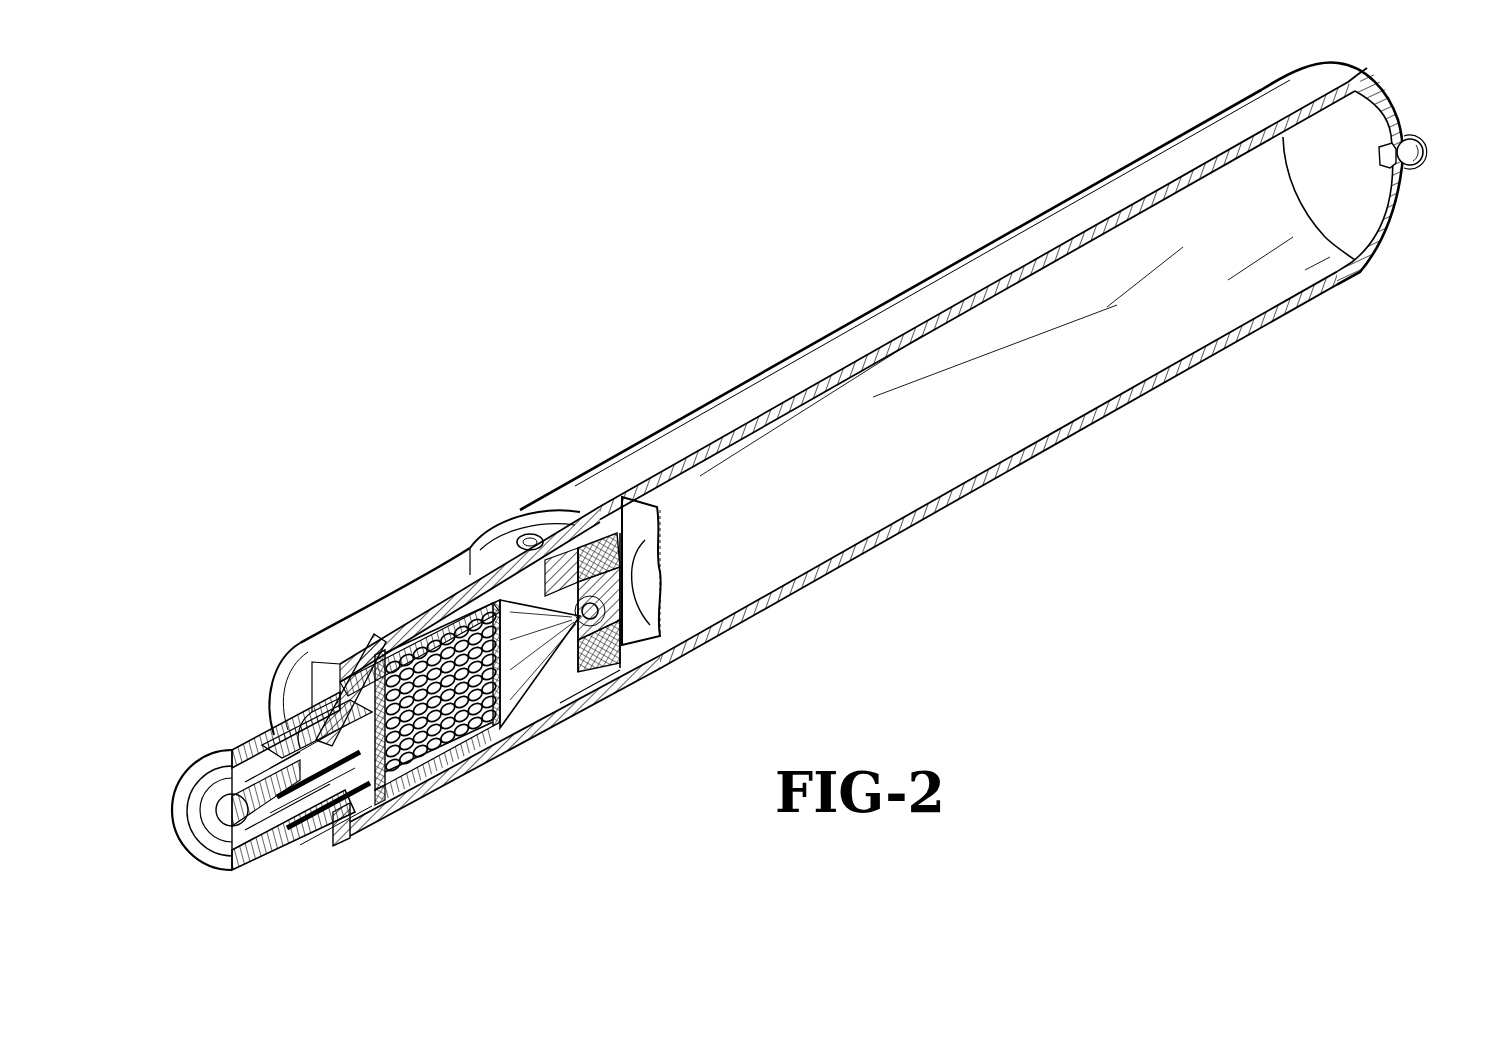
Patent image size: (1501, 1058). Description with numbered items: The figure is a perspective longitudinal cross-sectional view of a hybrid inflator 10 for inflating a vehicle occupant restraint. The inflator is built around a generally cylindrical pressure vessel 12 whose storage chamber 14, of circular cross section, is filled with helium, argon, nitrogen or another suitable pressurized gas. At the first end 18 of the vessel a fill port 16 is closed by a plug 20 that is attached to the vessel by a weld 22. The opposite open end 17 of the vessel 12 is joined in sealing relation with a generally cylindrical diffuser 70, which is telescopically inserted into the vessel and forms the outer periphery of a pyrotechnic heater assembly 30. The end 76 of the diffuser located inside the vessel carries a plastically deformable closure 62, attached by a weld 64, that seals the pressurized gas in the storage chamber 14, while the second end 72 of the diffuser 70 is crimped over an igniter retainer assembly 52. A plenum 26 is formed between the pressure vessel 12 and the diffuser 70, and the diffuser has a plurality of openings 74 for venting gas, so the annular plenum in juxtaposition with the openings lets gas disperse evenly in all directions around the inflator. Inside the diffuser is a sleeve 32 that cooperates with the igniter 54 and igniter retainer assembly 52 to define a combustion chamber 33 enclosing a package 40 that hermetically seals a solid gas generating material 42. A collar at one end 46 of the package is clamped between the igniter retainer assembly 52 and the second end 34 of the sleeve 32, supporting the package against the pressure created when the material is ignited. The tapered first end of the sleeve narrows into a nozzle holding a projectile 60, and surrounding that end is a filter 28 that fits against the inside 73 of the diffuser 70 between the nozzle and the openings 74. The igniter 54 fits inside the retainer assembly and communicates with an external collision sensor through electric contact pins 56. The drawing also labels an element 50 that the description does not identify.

The hybrid inflator 10 is at (530, 265).
The pressure vessel 12 is at (993, 297).
The storage chamber 14 is at (1095, 352).
The fill port 16 is at (1386, 156).
The open end 17 is at (600, 706).
The first end 18 is at (1383, 95).
The plug 20 is at (1418, 150).
The weld 22 is at (1405, 170).
The plenum 26 is at (500, 532).
The filter 28 is at (606, 550).
The pyrotechnic heater assembly 30 is at (385, 553).
The sleeve 32 is at (425, 627).
The combustion chamber 33 is at (450, 620).
The second end 34 is at (395, 640).
The package 40 is at (474, 768).
The solid gas generating material 42 is at (455, 722).
The one end 46 is at (432, 800).
The retainer 50 is at (350, 832).
The igniter retainer assembly 52 is at (290, 836).
The igniter 54 is at (300, 745).
The electric contact pins 56 is at (242, 800).
The projectile 60 is at (597, 652).
The closure 62 is at (664, 572).
The weld 64 is at (664, 515).
The diffuser 70 is at (440, 790).
The second end 72 is at (345, 670).
The inside 73 is at (585, 560).
The openings 74 is at (530, 545).
The end 76 is at (660, 632).